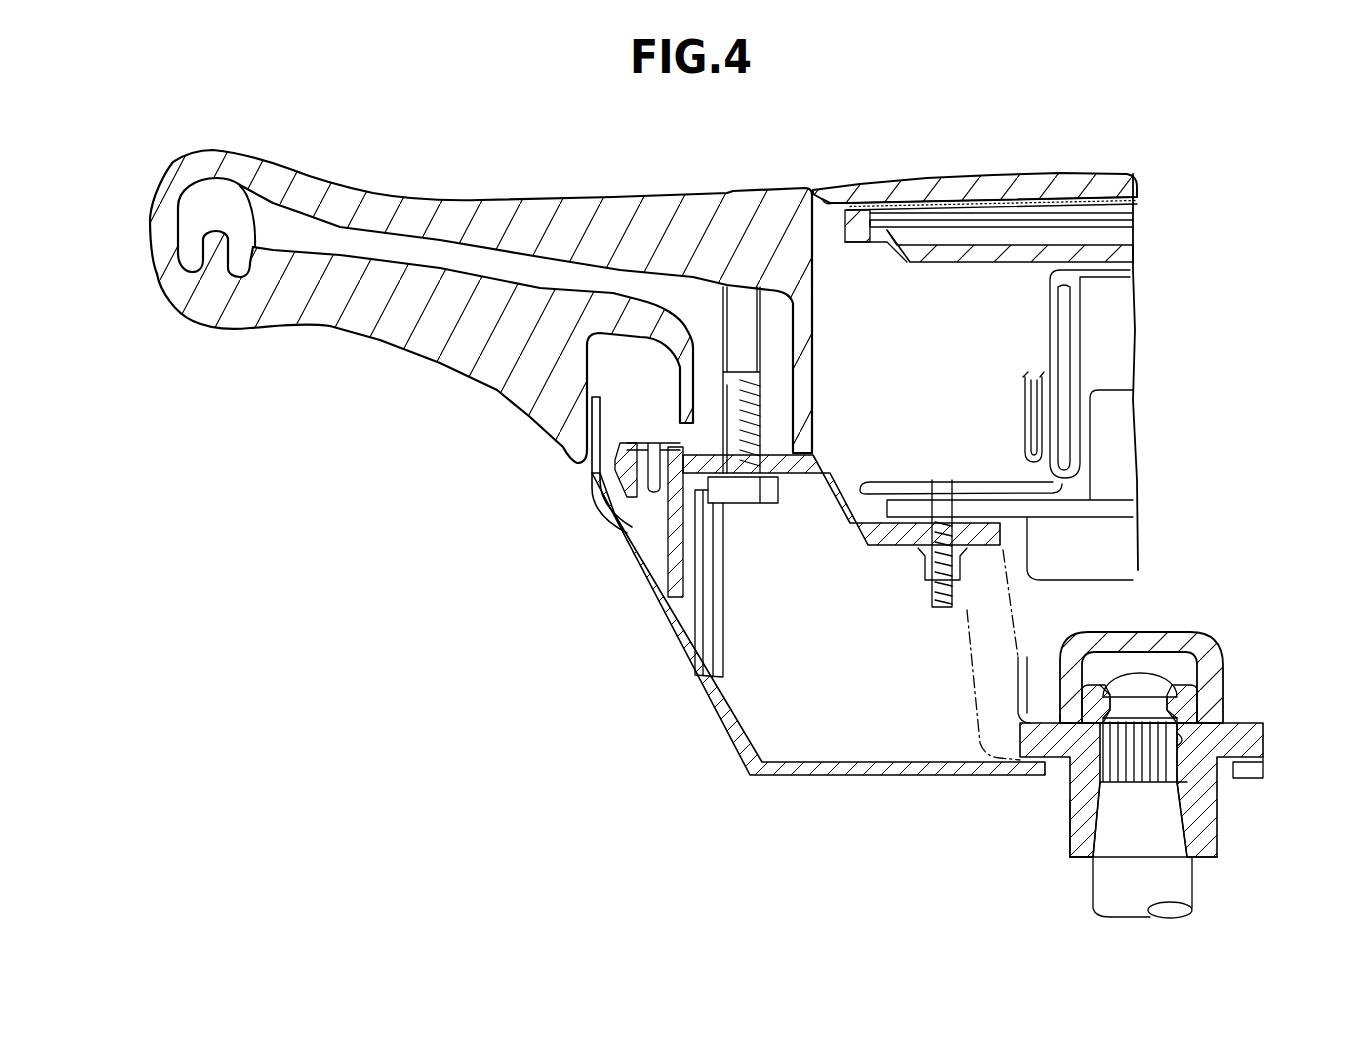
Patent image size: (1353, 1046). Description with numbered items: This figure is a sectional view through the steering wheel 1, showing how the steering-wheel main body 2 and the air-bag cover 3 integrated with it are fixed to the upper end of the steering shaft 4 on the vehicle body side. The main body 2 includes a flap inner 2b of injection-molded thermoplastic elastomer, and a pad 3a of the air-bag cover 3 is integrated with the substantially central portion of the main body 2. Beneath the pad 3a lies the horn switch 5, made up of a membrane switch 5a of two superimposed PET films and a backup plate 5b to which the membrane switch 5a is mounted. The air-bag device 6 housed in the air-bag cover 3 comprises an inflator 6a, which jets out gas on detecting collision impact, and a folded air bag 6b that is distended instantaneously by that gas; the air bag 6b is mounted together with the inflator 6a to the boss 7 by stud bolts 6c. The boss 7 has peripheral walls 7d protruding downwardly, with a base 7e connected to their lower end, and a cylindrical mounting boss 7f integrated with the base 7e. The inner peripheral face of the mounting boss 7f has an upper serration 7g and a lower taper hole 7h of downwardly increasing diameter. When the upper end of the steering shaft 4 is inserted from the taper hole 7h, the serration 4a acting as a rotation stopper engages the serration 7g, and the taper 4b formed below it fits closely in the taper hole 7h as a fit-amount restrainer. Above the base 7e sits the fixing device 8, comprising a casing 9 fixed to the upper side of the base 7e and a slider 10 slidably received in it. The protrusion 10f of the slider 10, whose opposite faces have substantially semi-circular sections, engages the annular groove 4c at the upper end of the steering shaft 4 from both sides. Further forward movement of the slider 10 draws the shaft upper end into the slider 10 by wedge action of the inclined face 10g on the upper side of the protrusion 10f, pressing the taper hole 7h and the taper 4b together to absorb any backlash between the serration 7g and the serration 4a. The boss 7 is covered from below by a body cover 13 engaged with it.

The steering wheel 1 is at (481, 297).
The steering-wheel main body 2 is at (573, 222).
The flap inner 2b is at (1075, 197).
The air-bag cover 3 is at (975, 148).
The pad 3a is at (1010, 180).
The steering shaft 4 is at (1188, 780).
The serration 4a is at (1150, 770).
The taper 4b is at (1165, 840).
The annular groove 4c is at (1167, 705).
The horn switch 5 is at (1057, 227).
The membrane switch 5a is at (1100, 220).
The backup plate 5b is at (1115, 257).
The air-bag device 6 is at (1065, 438).
The inflator 6a is at (1125, 428).
The air bag 6b is at (1100, 363).
The stud bolts 6c is at (940, 500).
The boss 7 is at (1003, 682).
The peripheral walls 7d is at (1006, 702).
The base 7e is at (1242, 727).
The mounting boss 7f is at (1085, 825).
The serration 7g is at (1170, 740).
The taper hole 7h is at (1082, 850).
The fixing device 8 is at (1132, 665).
The casing 9 is at (1154, 641).
The slider 10 is at (1129, 690).
The protrusion 10f is at (1090, 730).
The inclined face 10g is at (1108, 690).
The body cover 13 is at (783, 775).